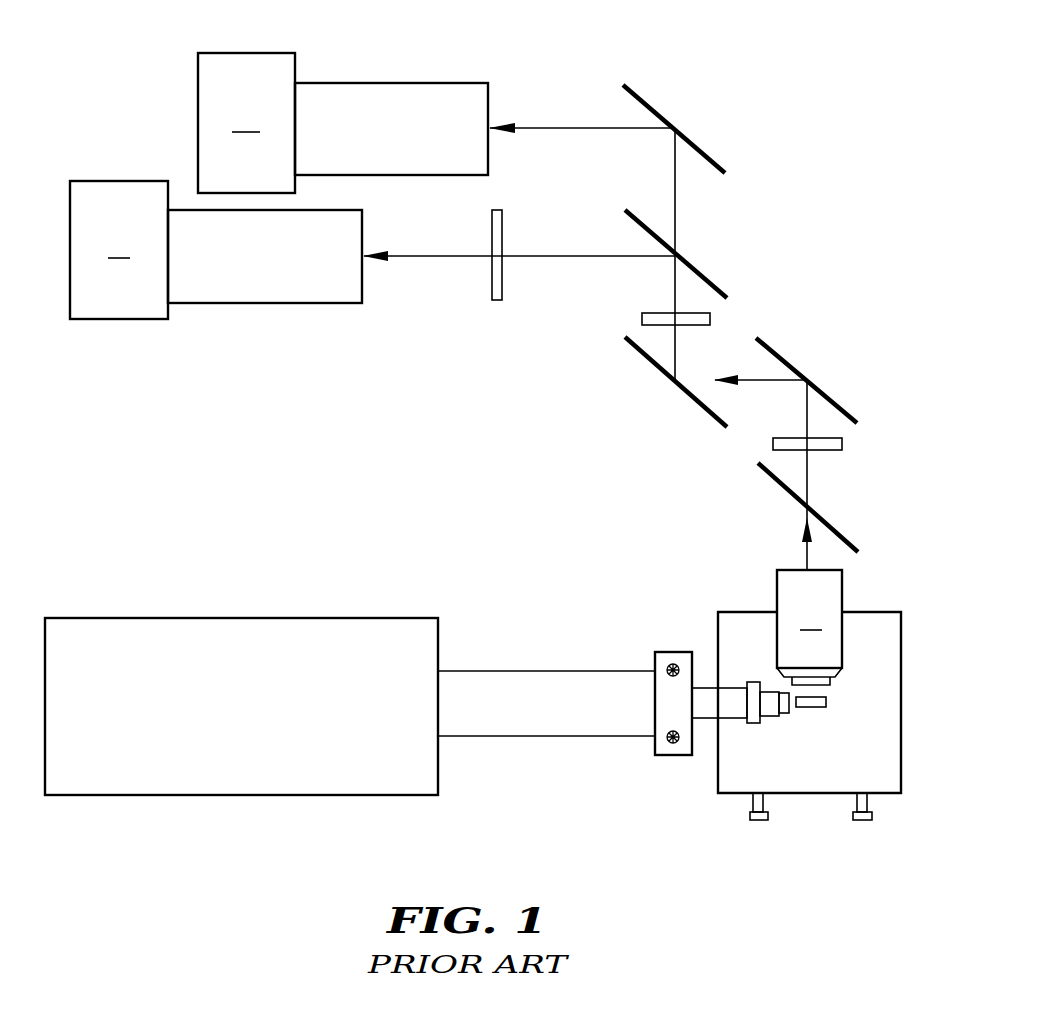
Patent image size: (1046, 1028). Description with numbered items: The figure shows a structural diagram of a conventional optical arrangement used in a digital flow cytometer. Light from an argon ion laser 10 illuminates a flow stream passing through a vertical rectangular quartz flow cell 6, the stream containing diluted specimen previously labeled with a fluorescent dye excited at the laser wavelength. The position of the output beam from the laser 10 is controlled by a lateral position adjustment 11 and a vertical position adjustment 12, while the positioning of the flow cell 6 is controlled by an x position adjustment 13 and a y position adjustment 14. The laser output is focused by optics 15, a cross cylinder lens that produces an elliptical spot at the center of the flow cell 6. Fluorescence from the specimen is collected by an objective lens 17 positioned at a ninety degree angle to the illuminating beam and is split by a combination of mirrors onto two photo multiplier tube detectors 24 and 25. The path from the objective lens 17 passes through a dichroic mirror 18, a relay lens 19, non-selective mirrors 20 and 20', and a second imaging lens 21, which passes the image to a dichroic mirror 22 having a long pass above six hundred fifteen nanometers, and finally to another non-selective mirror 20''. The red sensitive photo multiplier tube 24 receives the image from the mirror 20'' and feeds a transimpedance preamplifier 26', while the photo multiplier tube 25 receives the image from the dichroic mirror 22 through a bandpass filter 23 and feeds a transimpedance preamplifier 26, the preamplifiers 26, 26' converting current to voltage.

The flow cell 6 is at (827, 702).
The argon ion laser 10 is at (325, 618).
The lateral position adjustment 11 is at (672, 745).
The vertical position adjustment 12 is at (668, 666).
The x position adjustment 13 is at (757, 821).
The y position adjustment 14 is at (862, 821).
The optics 15 is at (789, 712).
The objective lens 17 is at (811, 627).
The dichroic mirror 18 is at (842, 536).
The relay lens 19 is at (833, 451).
The non-selective mirror 20 is at (843, 380).
The non-selective mirror 20' is at (644, 382).
The non-selective mirror 20'' is at (674, 93).
The second imaging lens 21 is at (658, 316).
The dichroic mirror 22 is at (707, 275).
The filter 23 is at (503, 232).
The red sensitive photo multiplier tube 24 is at (447, 82).
The photo multiplier tube 25 is at (298, 297).
The transimpedance preamplifier 26 is at (119, 250).
The transimpedance preamplifier 26' is at (246, 123).